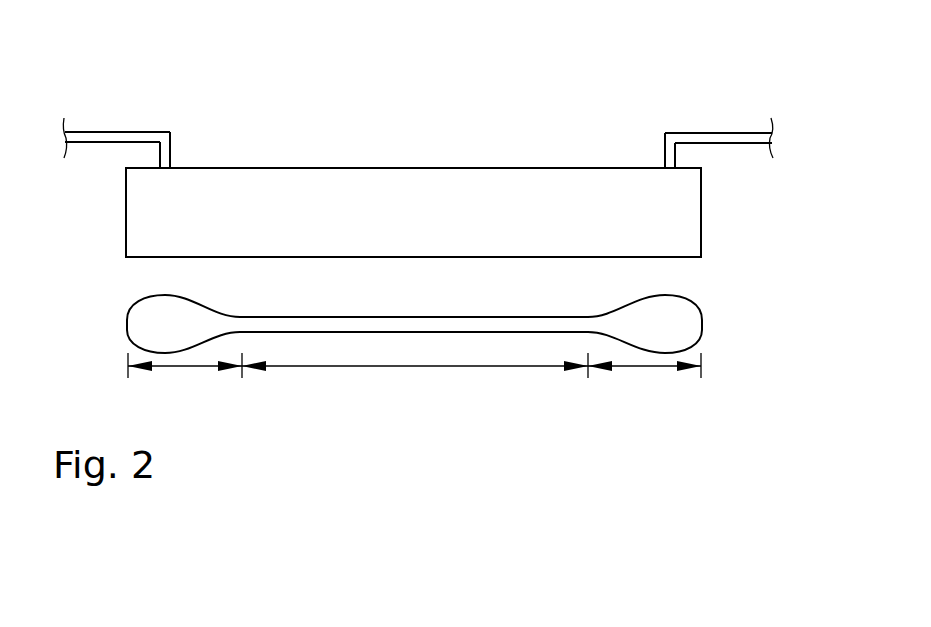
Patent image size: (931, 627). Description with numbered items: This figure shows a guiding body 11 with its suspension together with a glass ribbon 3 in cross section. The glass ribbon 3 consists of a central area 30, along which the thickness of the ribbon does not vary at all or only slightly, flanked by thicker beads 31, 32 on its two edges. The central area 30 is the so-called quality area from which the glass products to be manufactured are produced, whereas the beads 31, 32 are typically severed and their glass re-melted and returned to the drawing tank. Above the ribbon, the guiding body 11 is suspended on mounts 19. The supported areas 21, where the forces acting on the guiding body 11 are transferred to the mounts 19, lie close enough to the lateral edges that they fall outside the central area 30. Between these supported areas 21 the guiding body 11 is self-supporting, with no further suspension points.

The glass ribbon 3 is at (702, 322).
The guiding body 11 is at (702, 231).
The mounts 19 is at (120, 132).
The supported areas 21 is at (172, 167).
The central area 30 is at (415, 383).
The bead 31 is at (185, 379).
The right end section 32 is at (644, 379).